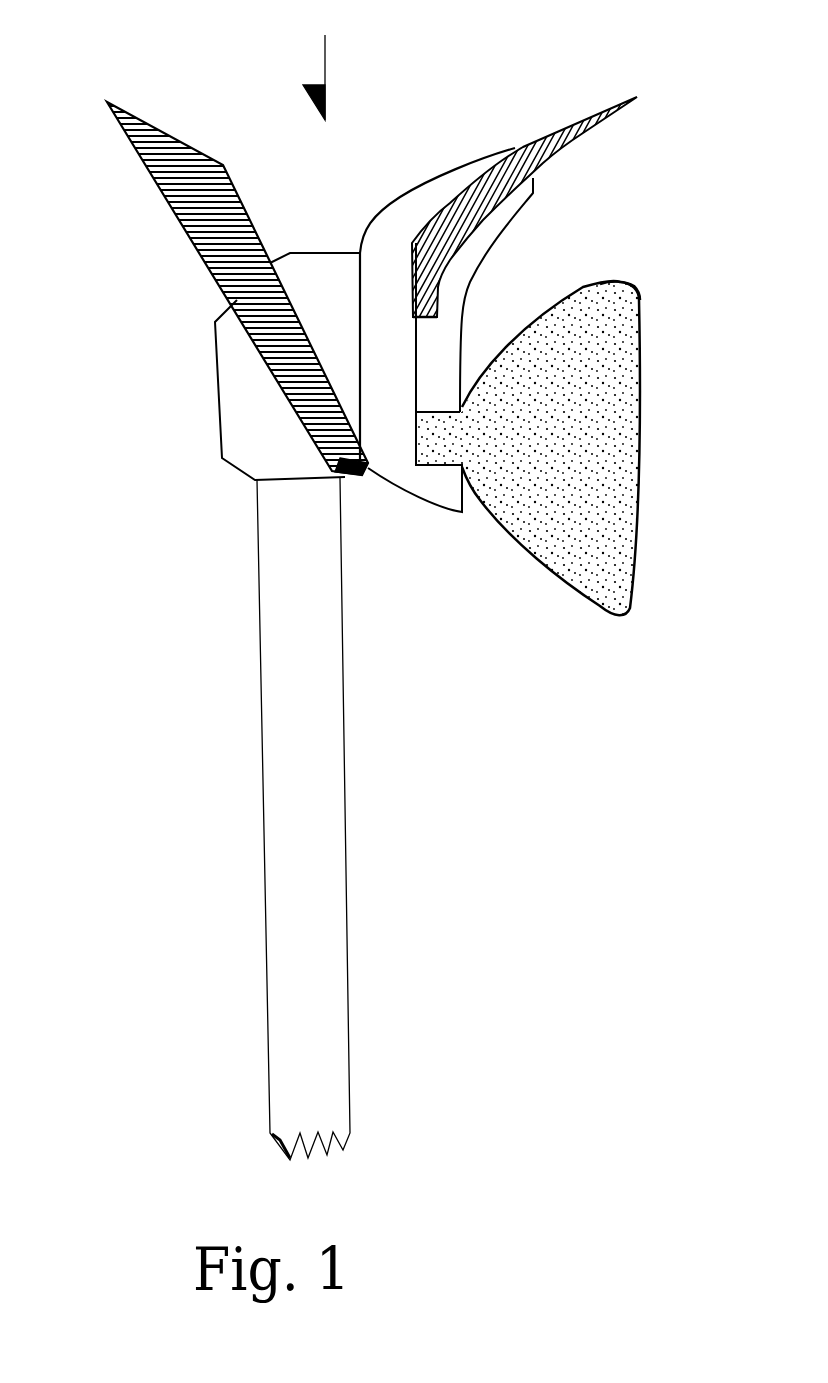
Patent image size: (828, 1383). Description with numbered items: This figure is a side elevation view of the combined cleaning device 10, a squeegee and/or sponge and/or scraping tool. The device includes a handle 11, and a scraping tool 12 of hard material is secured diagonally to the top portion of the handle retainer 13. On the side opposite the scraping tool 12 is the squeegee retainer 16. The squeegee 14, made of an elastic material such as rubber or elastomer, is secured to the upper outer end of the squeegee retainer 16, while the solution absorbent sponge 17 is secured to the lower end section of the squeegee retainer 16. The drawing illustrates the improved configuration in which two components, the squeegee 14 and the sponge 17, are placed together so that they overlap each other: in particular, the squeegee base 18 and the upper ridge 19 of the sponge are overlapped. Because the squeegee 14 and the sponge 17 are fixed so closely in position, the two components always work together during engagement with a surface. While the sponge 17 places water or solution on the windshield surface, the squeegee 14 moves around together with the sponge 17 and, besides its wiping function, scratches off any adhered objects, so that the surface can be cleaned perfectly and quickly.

The combined cleaning device 10 is at (337, 60).
The handle 11 is at (278, 685).
The scraping tool 12 is at (163, 187).
The handle retainer 13 is at (243, 393).
The squeegee 14 is at (578, 117).
The squeegee retainer 16 is at (418, 203).
The solution absorbent sponge 17 is at (577, 433).
The squeegee base 18 is at (437, 293).
The upper ridge of the sponge 19 is at (640, 287).